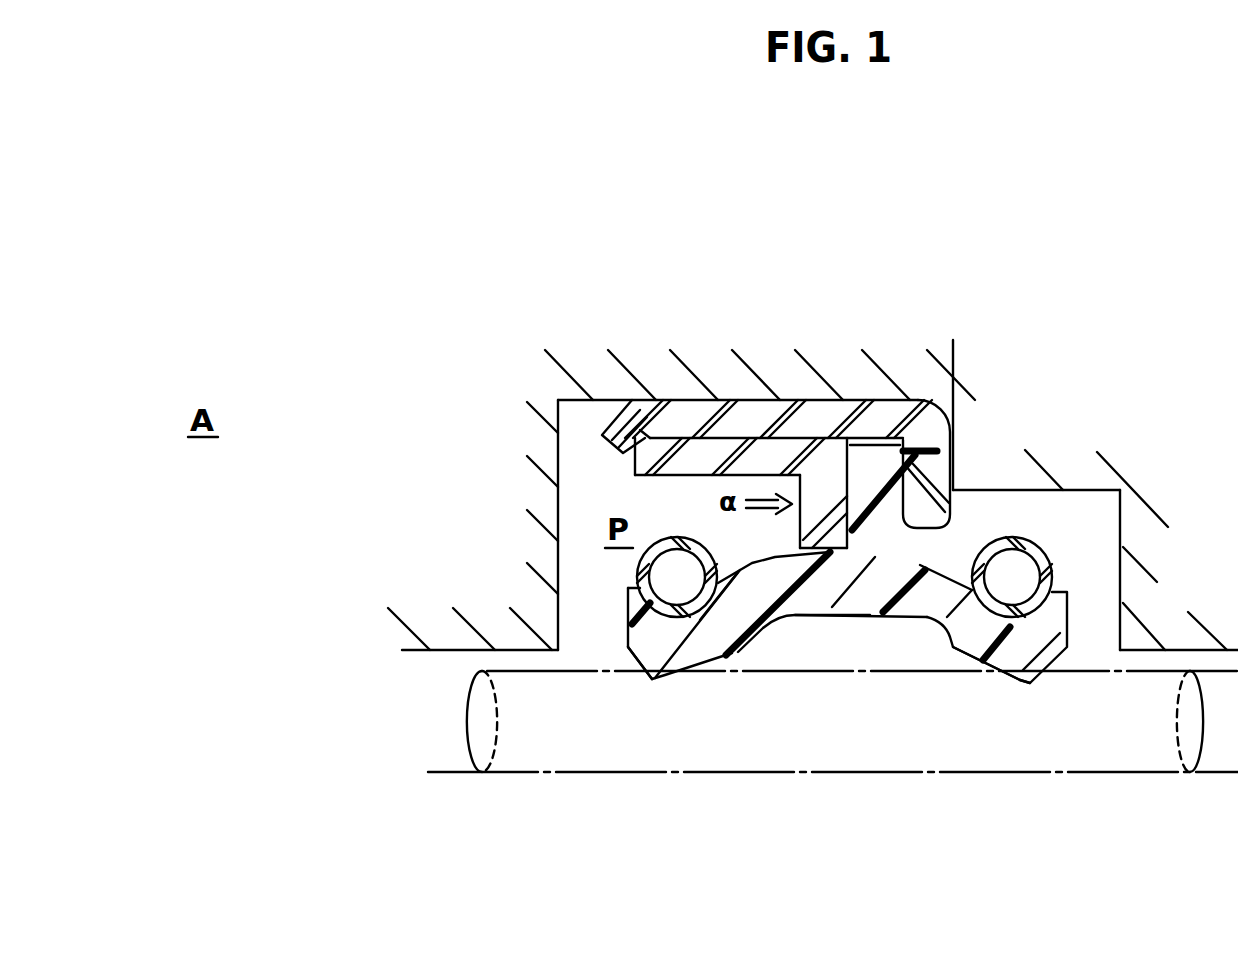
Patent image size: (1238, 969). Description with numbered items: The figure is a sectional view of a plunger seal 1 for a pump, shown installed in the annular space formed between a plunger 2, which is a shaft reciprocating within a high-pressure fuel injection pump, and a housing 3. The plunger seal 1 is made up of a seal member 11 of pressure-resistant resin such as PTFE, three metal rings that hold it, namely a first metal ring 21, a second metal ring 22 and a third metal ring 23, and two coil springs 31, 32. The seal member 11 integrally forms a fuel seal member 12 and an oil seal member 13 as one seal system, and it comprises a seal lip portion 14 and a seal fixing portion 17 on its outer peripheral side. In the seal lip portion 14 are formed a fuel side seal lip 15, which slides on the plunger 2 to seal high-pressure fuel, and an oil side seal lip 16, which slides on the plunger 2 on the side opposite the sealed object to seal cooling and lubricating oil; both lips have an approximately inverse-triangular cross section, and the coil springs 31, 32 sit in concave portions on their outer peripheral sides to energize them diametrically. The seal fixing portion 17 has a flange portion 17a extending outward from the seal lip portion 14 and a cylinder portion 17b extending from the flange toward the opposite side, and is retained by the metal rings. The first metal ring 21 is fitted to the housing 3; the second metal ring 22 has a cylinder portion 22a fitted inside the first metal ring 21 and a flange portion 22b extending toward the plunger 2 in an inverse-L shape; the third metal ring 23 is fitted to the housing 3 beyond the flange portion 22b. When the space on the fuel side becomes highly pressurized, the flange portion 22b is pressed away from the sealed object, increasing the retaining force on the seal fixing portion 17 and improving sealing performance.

The plunger seal 1 is at (841, 555).
The plunger 2 is at (895, 745).
The housing 3 is at (824, 352).
The seal member 11 is at (828, 660).
The fuel seal member 12 is at (764, 550).
The oil seal member 13 is at (955, 566).
The seal lip portion 14 is at (855, 597).
The fuel side seal lip 15 is at (663, 673).
The oil side seal lip 16 is at (1028, 667).
The seal fixing portion 17 is at (915, 465).
The flange portion 17a is at (950, 566).
The cylinder portion 17b is at (948, 538).
The first metal ring 21 is at (789, 420).
The second metal ring 22 is at (767, 362).
The cylinder portion 22a is at (665, 450).
The flange portion 22b is at (887, 463).
The third metal ring 23 is at (968, 460).
The coil spring 31 is at (637, 573).
The coil spring 32 is at (1047, 573).